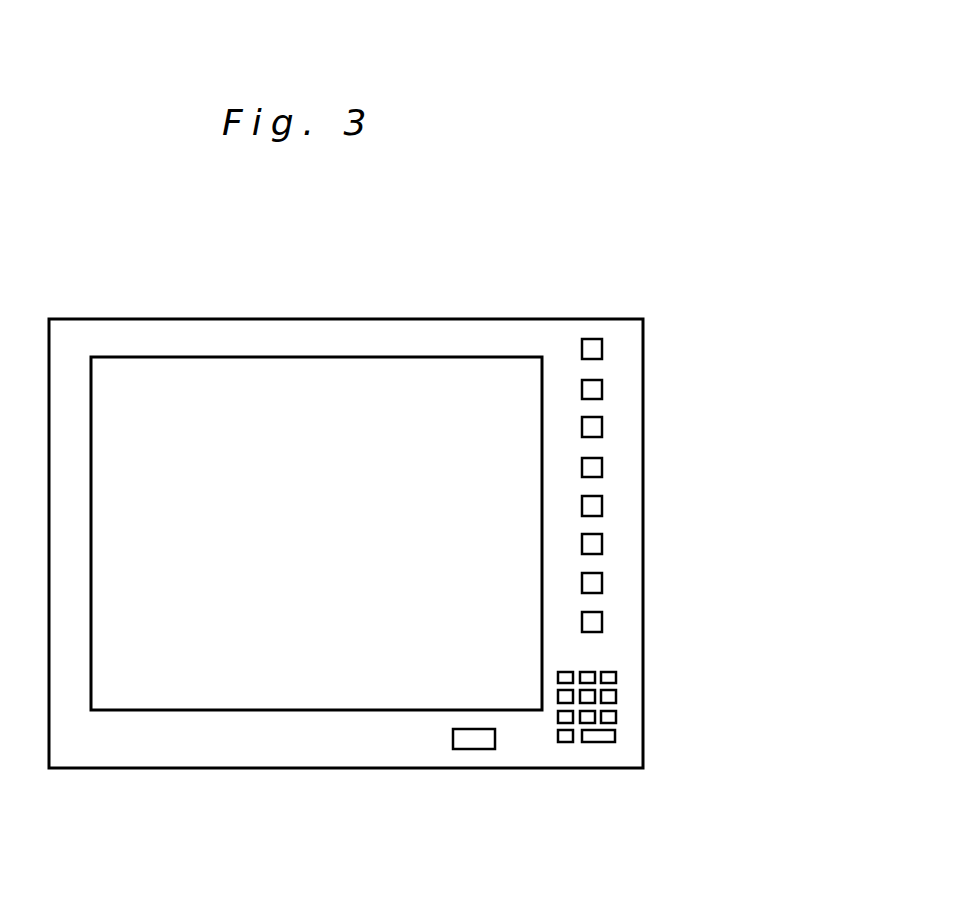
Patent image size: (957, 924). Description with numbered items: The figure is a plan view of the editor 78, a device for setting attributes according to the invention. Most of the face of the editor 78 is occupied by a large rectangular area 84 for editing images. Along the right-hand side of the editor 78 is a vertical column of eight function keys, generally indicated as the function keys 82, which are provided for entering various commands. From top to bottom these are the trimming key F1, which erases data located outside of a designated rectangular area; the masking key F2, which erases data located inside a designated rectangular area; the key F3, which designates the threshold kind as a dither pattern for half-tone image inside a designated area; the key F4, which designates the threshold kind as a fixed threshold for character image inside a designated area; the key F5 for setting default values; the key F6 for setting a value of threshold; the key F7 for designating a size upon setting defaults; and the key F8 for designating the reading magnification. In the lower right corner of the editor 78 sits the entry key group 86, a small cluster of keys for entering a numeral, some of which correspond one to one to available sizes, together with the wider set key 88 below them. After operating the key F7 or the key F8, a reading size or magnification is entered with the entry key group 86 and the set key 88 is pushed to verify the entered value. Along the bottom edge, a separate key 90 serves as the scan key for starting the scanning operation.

The editor 78 is at (323, 312).
The area for editing images 84 is at (177, 383).
The function keys 82 is at (710, 484).
The trimming key F1 is at (603, 347).
The masking key F2 is at (603, 387).
The function key F3 is at (603, 425).
The function key F4 is at (603, 465).
The function key F5 is at (603, 504).
The function key F6 is at (603, 542).
The function key F7 is at (603, 581).
The function key F8 is at (662, 622).
The entry key group 86 is at (623, 695).
The set key 88 is at (598, 743).
The scan key 90 is at (470, 750).